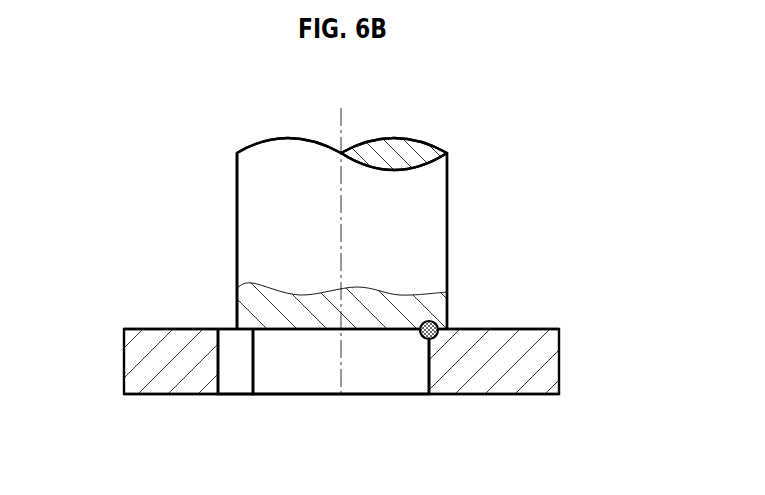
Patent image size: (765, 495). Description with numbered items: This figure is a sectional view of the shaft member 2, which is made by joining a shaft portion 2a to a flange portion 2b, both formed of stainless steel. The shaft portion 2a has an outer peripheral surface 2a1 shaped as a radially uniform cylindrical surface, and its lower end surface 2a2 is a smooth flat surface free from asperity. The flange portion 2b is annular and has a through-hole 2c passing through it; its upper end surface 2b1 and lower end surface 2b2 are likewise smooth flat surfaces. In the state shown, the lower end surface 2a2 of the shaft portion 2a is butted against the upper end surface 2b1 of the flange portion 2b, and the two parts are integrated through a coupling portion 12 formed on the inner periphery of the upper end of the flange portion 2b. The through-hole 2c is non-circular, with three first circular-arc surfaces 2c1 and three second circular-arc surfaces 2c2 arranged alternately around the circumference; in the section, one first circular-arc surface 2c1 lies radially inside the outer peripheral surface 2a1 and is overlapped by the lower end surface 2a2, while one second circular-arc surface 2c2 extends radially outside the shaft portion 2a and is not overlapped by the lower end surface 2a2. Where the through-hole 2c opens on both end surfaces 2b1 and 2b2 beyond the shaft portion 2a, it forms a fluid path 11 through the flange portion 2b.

The shaft member 2 is at (495, 153).
The shaft portion 2a is at (290, 163).
The outer peripheral surface 2a1 is at (236, 218).
The lower end surface 2a2 is at (322, 330).
The flange portion 2b is at (556, 368).
The upper end surface 2b1 is at (508, 328).
The lower end surface 2b2 is at (498, 395).
The through-hole 2c is at (423, 358).
The first circular-arc surface 2c1 is at (428, 372).
The second circular-arc surface 2c2 is at (219, 365).
The fluid path 11 is at (225, 337).
The coupling portion 12 is at (418, 341).